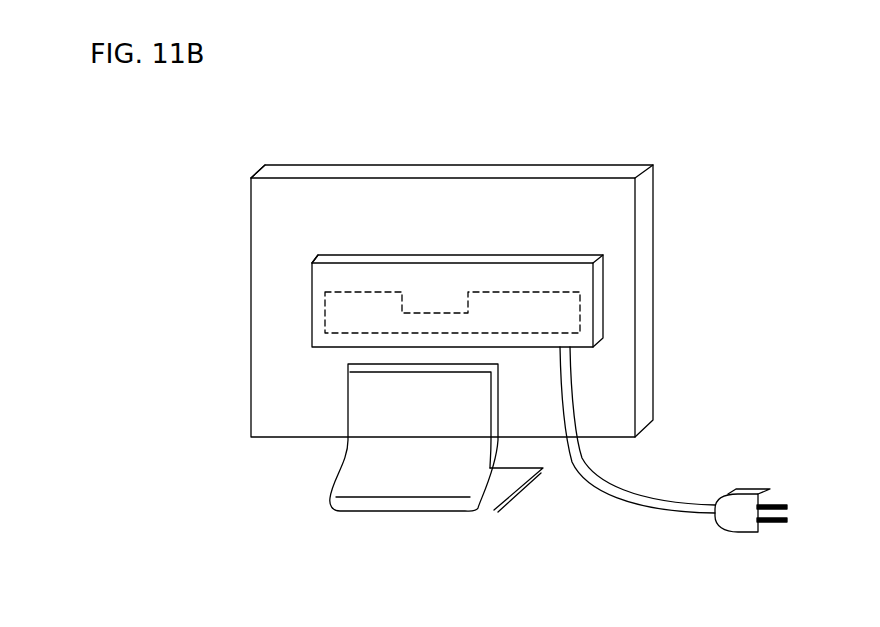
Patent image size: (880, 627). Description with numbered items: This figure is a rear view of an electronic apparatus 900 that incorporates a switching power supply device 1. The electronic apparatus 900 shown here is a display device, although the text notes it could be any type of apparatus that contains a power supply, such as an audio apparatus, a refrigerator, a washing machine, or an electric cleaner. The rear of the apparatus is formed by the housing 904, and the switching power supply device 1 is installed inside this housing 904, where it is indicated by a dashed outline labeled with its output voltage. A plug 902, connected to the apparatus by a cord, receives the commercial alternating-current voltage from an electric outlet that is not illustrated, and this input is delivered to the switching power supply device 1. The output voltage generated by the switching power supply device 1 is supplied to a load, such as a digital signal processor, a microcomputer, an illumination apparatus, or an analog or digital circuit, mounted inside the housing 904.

The electronic apparatus 900 is at (766, 148).
The housing 904 is at (516, 203).
The switching power supply device 1 is at (562, 315).
The plug 902 is at (735, 532).